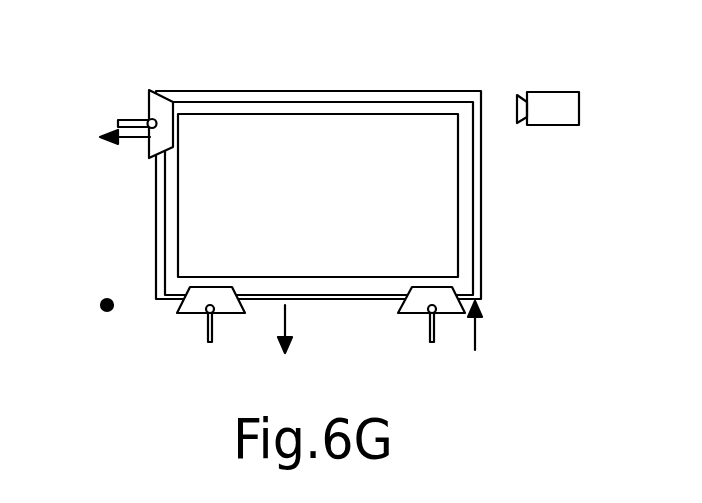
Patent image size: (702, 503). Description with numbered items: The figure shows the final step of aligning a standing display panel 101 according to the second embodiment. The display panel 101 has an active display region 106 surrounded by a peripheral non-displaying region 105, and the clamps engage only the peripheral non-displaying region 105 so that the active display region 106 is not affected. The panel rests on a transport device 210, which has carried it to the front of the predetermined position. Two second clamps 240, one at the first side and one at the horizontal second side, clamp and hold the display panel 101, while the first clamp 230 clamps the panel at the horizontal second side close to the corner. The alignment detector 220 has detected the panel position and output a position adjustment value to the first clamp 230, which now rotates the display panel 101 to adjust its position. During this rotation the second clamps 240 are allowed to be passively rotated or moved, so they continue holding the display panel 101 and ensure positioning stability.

The standing display panel 101 is at (477, 260).
The peripheral non-displaying region 105 is at (462, 218).
The active display region 106 is at (445, 172).
The transport device 210 is at (109, 312).
The alignment detector 220 is at (552, 97).
The first clamp 230 is at (240, 317).
The second clamp 240 is at (150, 98).